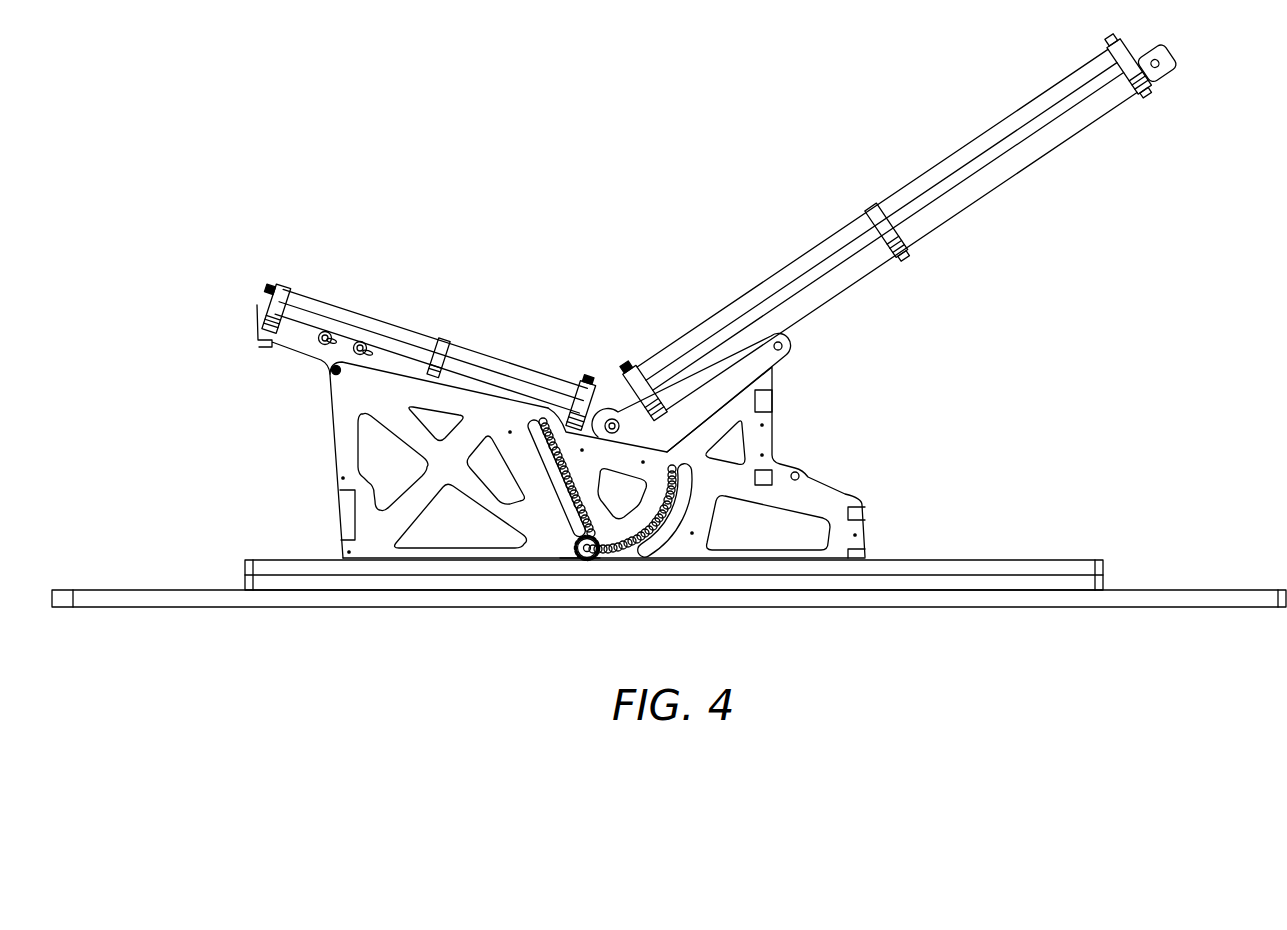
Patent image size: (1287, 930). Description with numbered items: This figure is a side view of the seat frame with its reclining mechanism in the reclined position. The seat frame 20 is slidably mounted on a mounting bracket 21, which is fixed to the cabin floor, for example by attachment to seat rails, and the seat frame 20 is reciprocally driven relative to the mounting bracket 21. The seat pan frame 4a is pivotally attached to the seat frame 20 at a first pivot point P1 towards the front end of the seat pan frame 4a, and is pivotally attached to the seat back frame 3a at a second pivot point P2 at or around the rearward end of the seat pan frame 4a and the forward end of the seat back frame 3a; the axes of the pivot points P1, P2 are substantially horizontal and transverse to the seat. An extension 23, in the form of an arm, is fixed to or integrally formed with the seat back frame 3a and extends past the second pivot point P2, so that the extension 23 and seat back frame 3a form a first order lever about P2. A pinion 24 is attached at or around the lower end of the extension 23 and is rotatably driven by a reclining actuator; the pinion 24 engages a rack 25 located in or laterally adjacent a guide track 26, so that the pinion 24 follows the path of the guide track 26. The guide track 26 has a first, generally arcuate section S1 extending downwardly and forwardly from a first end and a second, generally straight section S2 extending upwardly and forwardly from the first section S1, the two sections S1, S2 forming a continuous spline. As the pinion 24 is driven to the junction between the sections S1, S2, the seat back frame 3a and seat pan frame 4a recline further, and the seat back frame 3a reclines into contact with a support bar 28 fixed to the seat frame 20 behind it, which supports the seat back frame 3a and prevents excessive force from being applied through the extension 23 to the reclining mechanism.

The seat back frame 3a is at (822, 240).
The seat pan frame 4a is at (440, 340).
The seat frame 20 is at (357, 497).
The mounting bracket 21 is at (1057, 565).
The extension 23 is at (613, 483).
The pinion 24 is at (589, 565).
The rack 25 is at (552, 408).
The guide track 26 is at (520, 408).
The support bar 28 is at (790, 348).
The first pivot point P1 is at (330, 368).
The second pivot point P2 is at (606, 412).
The first section S1 is at (700, 477).
The second section S2 is at (558, 487).